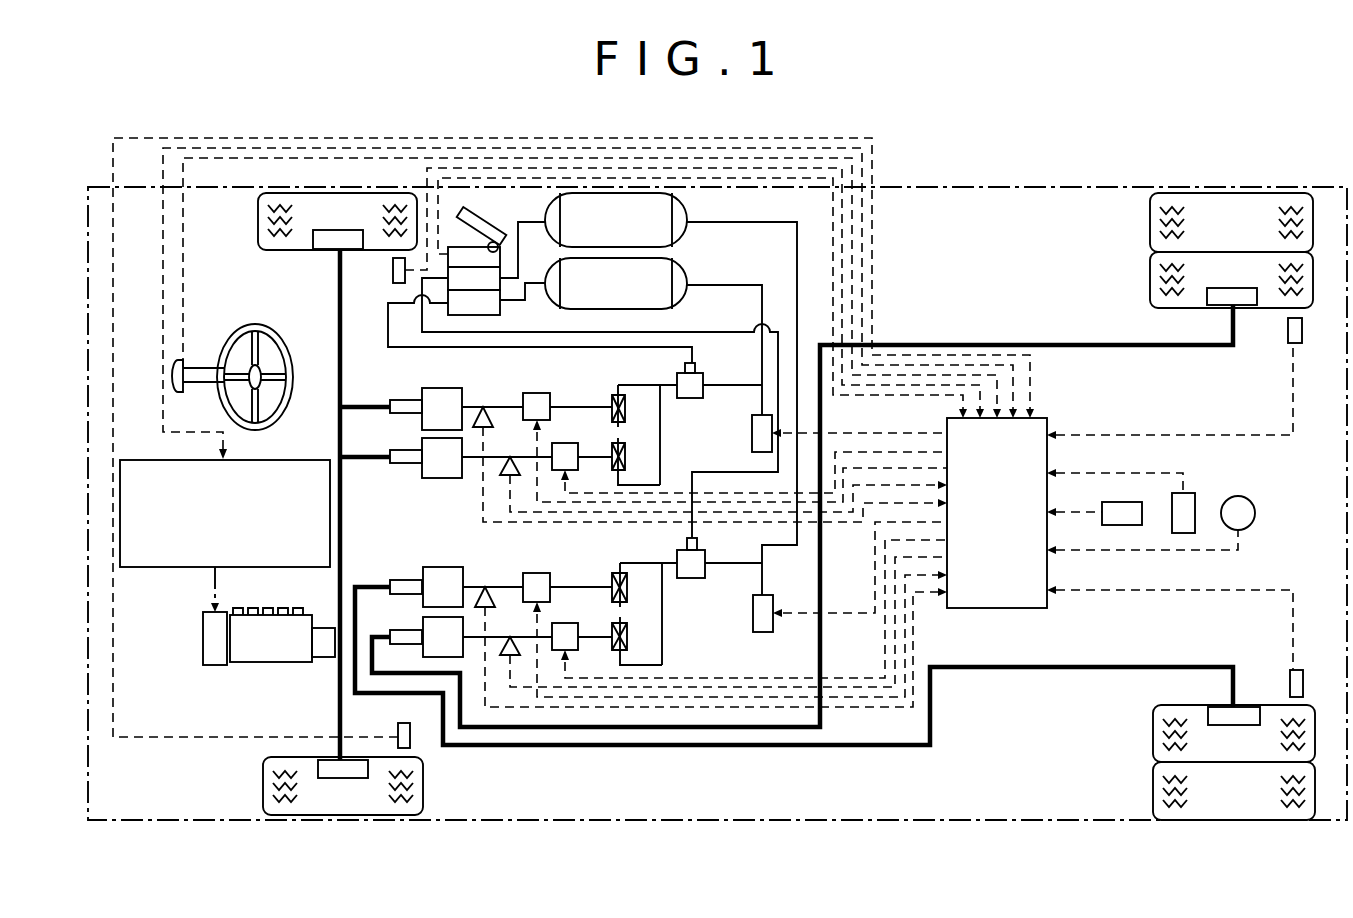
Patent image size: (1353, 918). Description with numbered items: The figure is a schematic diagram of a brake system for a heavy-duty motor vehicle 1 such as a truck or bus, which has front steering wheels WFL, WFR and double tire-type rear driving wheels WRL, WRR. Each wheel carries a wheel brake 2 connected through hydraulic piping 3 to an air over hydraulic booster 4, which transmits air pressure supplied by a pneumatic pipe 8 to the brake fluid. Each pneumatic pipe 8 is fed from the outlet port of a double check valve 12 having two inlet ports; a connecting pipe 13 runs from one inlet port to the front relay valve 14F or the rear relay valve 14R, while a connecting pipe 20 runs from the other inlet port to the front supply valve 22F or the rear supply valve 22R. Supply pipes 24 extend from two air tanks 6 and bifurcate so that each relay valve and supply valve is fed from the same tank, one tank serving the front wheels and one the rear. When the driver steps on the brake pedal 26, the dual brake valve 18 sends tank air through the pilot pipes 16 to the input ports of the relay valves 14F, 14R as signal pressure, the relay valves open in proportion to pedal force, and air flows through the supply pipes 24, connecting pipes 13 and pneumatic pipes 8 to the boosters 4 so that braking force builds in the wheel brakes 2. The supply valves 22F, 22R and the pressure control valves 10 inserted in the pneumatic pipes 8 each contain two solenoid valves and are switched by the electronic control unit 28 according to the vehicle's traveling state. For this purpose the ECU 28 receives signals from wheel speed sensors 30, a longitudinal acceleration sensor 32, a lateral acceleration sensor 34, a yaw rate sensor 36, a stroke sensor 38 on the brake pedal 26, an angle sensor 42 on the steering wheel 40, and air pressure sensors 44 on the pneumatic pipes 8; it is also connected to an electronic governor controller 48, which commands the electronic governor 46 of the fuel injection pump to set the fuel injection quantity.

The motor vehicle 1 is at (98, 174).
The wheel brake 2 is at (322, 247).
The hydraulic piping 3 is at (338, 326).
The air over hydraulic booster 4 is at (428, 446).
The air tank 6 is at (640, 275).
The pneumatic pipe 8 is at (470, 405).
The pressure control valve 10 is at (562, 442).
The double check valve 12 is at (610, 405).
The connecting pipe 13 is at (638, 484).
The front relay valve 14F is at (703, 386).
The rear relay valve 14R is at (702, 556).
The pilot pipe 16 is at (663, 332).
The dual brake valve 18 is at (500, 300).
The connecting pipe 20 is at (688, 427).
The front supply valve 22F is at (752, 446).
The rear supply valve 22R is at (753, 626).
The supply pipe 24 is at (713, 222).
The brake pedal 26 is at (487, 218).
The electronic control unit 28 is at (1020, 610).
The wheel speed sensor 30 is at (395, 270).
The longitudinal acceleration sensor 32 is at (1120, 502).
The lateral acceleration sensor 34 is at (1197, 498).
The yaw rate sensor 36 is at (1256, 513).
The stroke sensor 38 is at (453, 248).
The steering wheel 40 is at (252, 332).
The angle sensor 42 is at (193, 360).
The air pressure sensor 44 is at (486, 428).
The electronic governor 46 is at (215, 665).
The electronic governor controller 48 is at (265, 462).
The front right wheel WFR is at (338, 195).
The front left wheel WFL is at (340, 815).
The rear right wheel WRR is at (1258, 205).
The rear left wheel WRL is at (1248, 810).